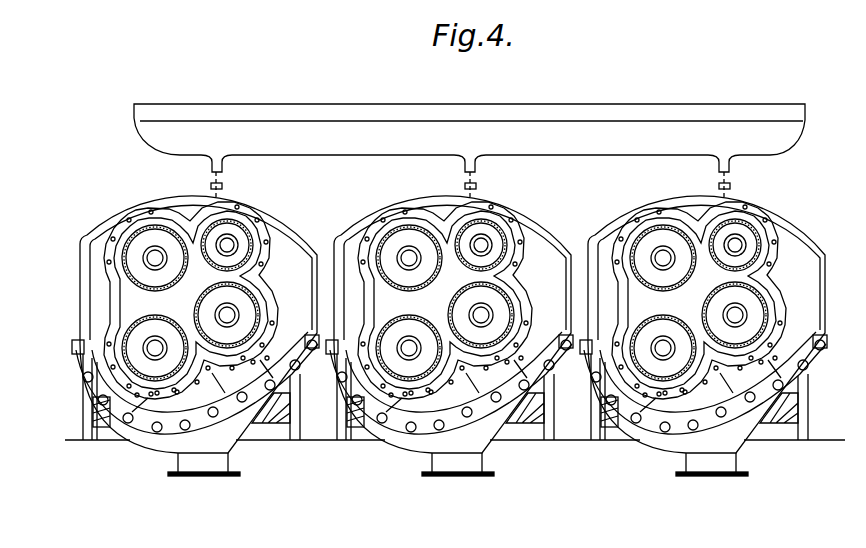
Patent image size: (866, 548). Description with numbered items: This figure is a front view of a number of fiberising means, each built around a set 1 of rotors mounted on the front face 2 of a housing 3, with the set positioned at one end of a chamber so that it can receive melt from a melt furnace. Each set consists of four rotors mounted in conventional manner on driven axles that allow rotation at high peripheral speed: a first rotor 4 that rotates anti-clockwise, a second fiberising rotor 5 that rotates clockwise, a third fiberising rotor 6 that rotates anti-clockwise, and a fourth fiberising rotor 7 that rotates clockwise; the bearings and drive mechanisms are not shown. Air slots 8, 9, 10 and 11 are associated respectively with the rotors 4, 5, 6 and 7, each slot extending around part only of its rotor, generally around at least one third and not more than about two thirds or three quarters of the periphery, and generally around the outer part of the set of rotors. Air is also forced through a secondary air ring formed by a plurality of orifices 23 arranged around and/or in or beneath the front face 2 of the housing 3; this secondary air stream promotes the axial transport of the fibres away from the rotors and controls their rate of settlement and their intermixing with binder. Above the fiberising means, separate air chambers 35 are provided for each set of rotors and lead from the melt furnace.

The set of rotors 1 is at (263, 246).
The front face 2 is at (170, 298).
The housing 3 is at (87, 236).
The first rotor 4 is at (230, 229).
The second fiberising rotor 5 is at (153, 235).
The third fiberising rotor 6 is at (242, 302).
The fourth fiberising rotor 7 is at (140, 347).
The air slot 8 is at (245, 230).
The air slot 9 is at (125, 251).
The air slot 10 is at (201, 272).
The air slot 11 is at (93, 362).
The orifices 23 is at (157, 426).
The air chambers 35 is at (577, 132).